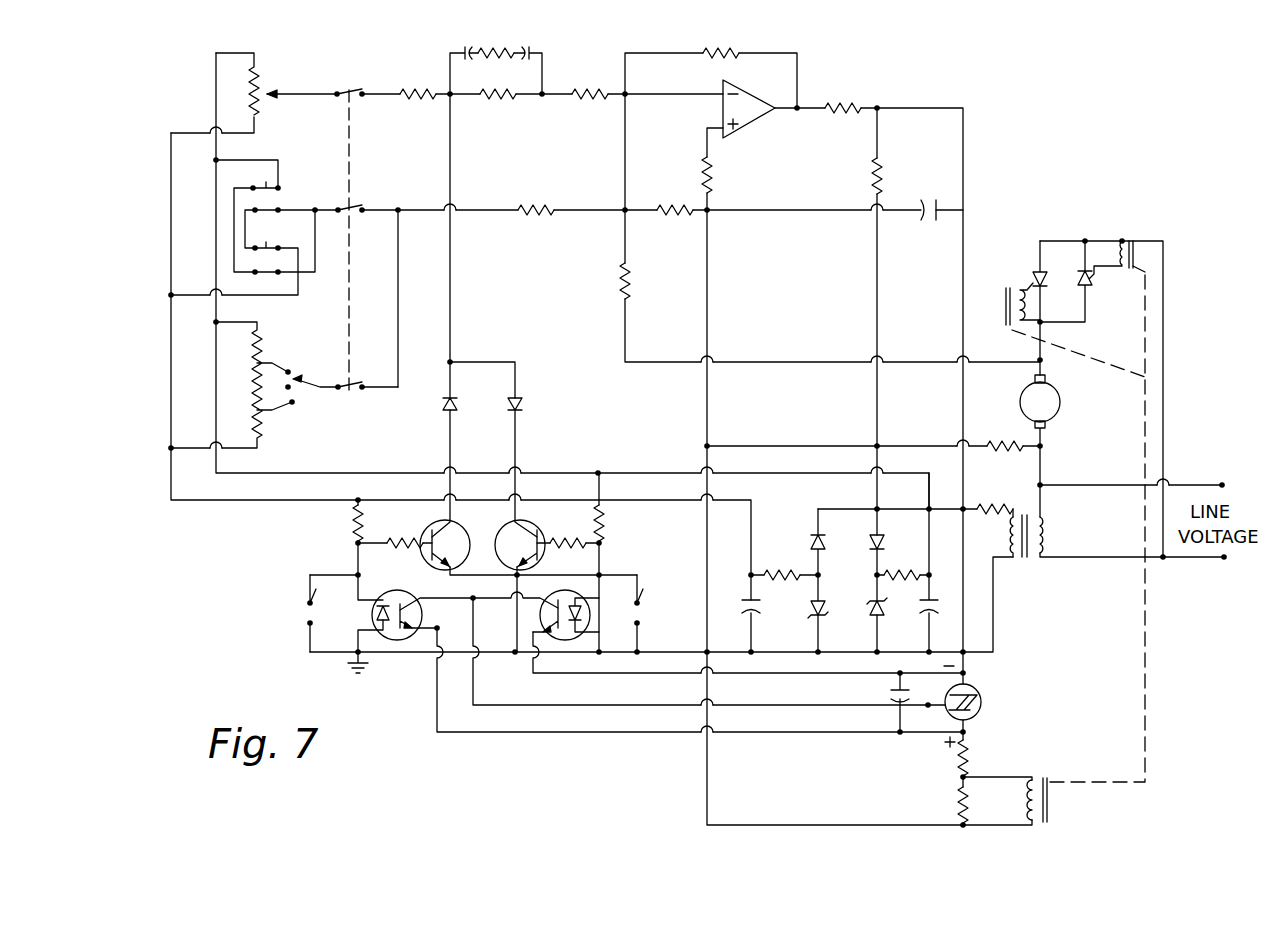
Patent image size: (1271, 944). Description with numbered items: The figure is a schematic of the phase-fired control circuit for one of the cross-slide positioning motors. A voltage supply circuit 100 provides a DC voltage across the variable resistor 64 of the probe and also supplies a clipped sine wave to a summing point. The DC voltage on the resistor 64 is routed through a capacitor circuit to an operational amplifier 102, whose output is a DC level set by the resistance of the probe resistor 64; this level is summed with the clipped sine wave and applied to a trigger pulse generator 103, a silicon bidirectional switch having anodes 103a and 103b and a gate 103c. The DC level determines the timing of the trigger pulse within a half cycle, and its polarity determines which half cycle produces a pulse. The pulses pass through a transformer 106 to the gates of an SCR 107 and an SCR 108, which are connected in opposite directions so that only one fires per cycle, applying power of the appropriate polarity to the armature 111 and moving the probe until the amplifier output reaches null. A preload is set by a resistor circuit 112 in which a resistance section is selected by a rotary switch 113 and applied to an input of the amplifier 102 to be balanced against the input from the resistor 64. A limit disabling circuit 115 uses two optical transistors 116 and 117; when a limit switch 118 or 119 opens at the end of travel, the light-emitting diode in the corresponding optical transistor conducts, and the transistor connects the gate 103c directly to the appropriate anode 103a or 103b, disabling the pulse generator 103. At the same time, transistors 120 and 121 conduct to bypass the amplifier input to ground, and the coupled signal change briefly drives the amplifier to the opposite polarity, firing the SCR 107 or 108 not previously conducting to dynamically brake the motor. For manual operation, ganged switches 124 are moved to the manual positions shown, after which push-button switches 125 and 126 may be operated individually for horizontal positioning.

The variable resistor 64 is at (260, 70).
The voltage supply circuit 100 is at (838, 506).
The operational amplifier 102 is at (780, 76).
The trigger pulse generator 103 is at (993, 705).
The anode 103a is at (970, 672).
The anode 103b is at (968, 732).
The gate 103c is at (928, 712).
The transformer 106 is at (1040, 820).
The SCR 107 is at (1037, 268).
The SCR 108 is at (1092, 286).
The armature 111 is at (1062, 402).
The resistor circuit 112 is at (278, 358).
The rotary switch 113 is at (321, 391).
The limit disabling circuit 115 is at (350, 573).
The optical transistor 116 is at (400, 642).
The optical transistor 117 is at (552, 592).
The limit switch 118 is at (305, 614).
The limit switch 119 is at (645, 612).
The transistor 120 is at (457, 530).
The transistor 121 is at (497, 565).
The ganged switches 124 is at (369, 118).
The push-button switch 125 is at (280, 188).
The push-button switch 126 is at (279, 247).